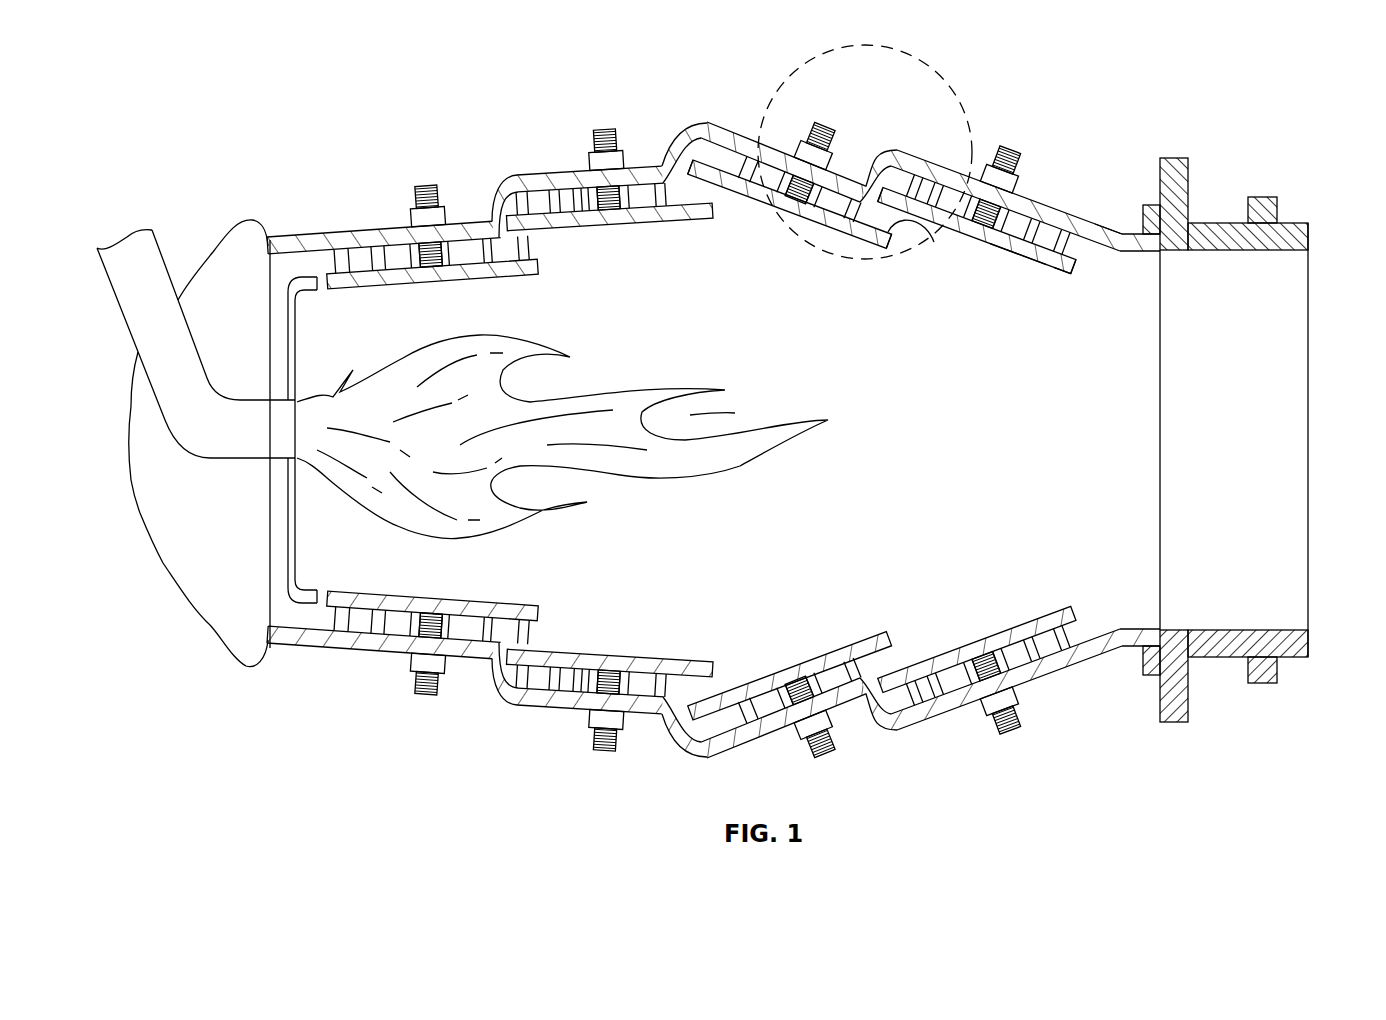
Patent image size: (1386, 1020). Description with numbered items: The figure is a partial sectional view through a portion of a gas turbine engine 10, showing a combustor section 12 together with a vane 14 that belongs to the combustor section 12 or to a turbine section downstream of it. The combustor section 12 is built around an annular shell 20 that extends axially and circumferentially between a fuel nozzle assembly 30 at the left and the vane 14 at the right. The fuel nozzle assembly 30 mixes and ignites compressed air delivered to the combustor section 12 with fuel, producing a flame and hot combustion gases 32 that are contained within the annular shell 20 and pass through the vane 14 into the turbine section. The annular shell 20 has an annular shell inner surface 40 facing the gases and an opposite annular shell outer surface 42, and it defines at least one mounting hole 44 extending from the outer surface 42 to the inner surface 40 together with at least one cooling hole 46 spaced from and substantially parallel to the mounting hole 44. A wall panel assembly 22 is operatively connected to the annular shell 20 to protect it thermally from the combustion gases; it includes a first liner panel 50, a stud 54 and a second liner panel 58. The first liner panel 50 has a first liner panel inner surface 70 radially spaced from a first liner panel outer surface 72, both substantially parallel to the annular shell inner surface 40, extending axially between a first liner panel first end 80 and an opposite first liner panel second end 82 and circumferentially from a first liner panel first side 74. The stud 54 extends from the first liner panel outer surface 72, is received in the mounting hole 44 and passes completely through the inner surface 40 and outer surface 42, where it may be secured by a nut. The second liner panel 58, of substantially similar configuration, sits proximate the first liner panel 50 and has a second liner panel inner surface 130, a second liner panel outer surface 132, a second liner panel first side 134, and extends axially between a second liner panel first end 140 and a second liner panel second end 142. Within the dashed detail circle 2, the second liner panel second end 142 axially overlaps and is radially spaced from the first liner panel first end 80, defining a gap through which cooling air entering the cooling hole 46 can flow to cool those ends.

The gas turbine engine 10 is at (245, 96).
The combustor section 12 is at (310, 193).
The vane 14 is at (1311, 603).
The annular shell 20 is at (1019, 222).
The wall panel assembly 22 is at (838, 251).
The fuel nozzle assembly 30 is at (247, 493).
The flame and/or hot combustion gases 32 is at (610, 490).
The annular shell inner surface 40 is at (1106, 253).
The annular shell outer surface 42 is at (1114, 212).
The mounting hole 44 is at (975, 173).
The cooling hole 46 is at (822, 172).
The first liner panel 50 is at (986, 257).
The stud 54 is at (822, 128).
The second liner panel 58 is at (840, 240).
The first liner panel inner surface 70 is at (1030, 268).
The first liner panel outer surface 72 is at (1082, 258).
The first liner panel first side 74 is at (1062, 270).
The first liner panel first end 80 is at (900, 158).
The first liner panel second end 82 is at (1093, 228).
The second liner panel inner surface 130 is at (880, 250).
The second liner panel outer surface 132 is at (918, 240).
The second liner panel first side 134 is at (803, 220).
The second liner panel first end 140 is at (705, 220).
The second liner panel second end 142 is at (900, 258).
The detail region 2 is at (832, 52).